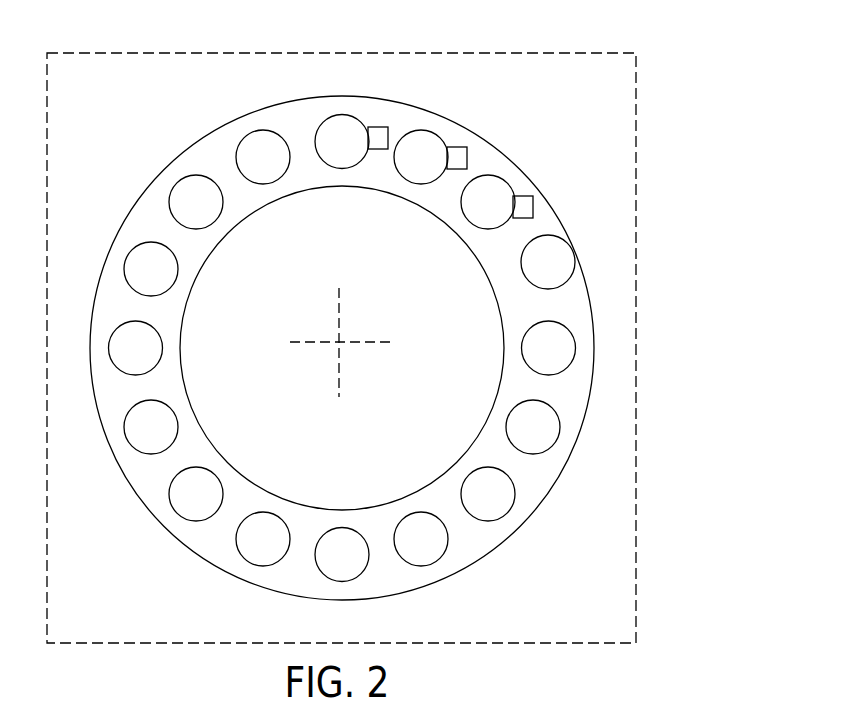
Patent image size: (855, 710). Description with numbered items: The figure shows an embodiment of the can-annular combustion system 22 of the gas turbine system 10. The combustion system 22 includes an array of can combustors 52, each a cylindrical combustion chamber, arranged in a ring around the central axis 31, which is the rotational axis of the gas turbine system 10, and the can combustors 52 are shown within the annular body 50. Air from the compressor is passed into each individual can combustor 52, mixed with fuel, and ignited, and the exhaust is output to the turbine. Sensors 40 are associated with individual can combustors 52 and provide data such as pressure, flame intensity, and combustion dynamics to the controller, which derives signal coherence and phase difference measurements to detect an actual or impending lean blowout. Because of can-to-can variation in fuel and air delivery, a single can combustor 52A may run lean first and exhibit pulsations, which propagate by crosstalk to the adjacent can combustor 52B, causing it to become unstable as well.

The gas turbine system 10 is at (694, 74).
The combustion system 22 is at (636, 147).
The central axis 31 is at (365, 328).
The sensors 40 is at (522, 218).
The annular ring 50 is at (163, 171).
The can combustors 52 is at (362, 124).
The can combustor 52A is at (434, 134).
The can combustor 52B is at (505, 184).